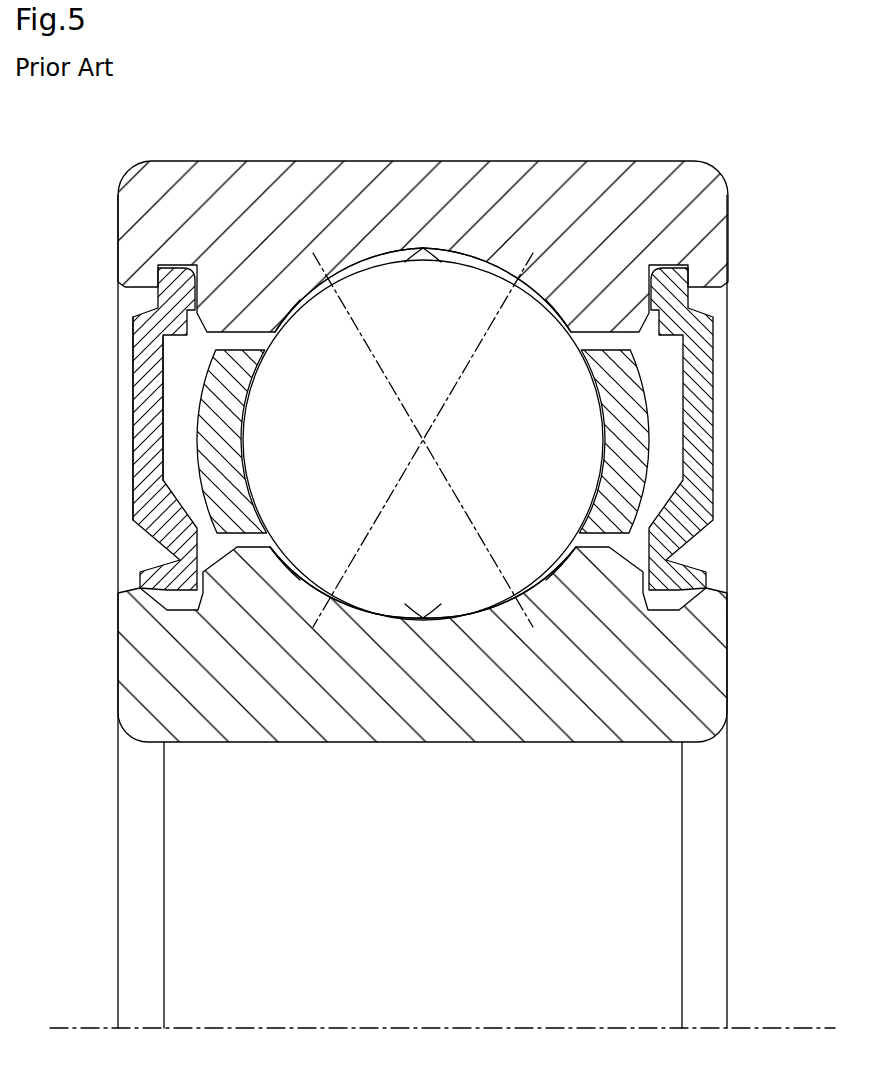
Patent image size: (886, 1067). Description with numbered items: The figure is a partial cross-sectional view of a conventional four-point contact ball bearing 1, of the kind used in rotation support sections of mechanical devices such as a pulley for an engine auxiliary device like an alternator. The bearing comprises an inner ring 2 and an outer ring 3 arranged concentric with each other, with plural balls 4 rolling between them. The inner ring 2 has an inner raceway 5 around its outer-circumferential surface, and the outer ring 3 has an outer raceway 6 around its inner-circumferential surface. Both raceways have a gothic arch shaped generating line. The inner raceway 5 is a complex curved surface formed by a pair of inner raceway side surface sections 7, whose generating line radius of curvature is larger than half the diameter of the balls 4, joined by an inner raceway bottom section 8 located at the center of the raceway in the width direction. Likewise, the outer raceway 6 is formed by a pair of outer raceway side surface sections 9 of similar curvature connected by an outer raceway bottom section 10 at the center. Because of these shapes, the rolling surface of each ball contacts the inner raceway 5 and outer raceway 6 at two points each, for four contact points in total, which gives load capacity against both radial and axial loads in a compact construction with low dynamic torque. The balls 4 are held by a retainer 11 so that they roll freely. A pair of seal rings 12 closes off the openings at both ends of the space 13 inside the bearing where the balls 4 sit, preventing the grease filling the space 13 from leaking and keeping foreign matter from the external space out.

The four-point contact ball bearing 1 is at (435, 535).
The inner ring 2 is at (474, 689).
The outer ring 3 is at (473, 188).
The balls 4 is at (557, 402).
The inner raceway 5 is at (322, 593).
The outer raceway 6 is at (419, 284).
The inner raceway side surface sections 7 is at (316, 578).
The inner raceway bottom section 8 is at (430, 637).
The outer raceway side surface sections 9 is at (328, 300).
The outer raceway bottom section 10 is at (419, 284).
The retainer 11 is at (625, 467).
The seal rings 12 is at (153, 354).
The space inside the bearing 13 is at (183, 390).